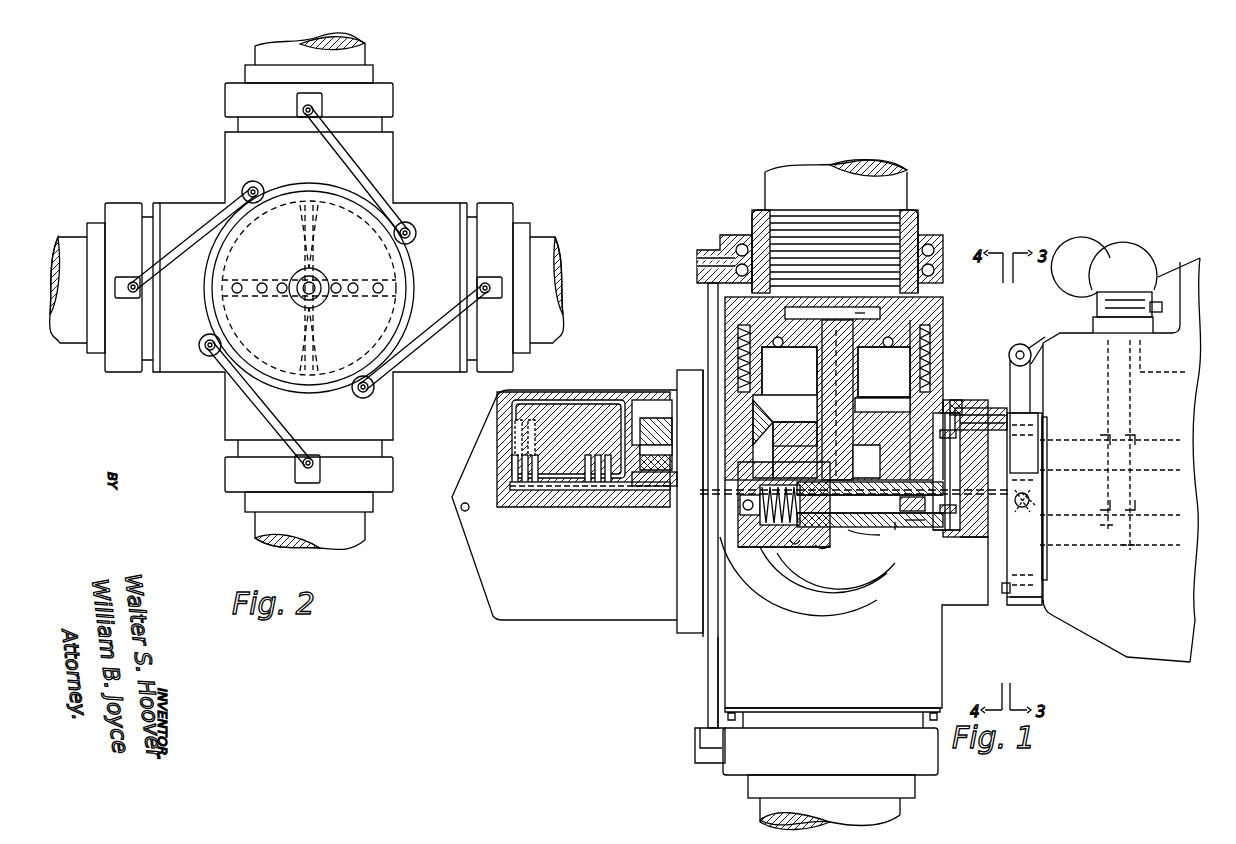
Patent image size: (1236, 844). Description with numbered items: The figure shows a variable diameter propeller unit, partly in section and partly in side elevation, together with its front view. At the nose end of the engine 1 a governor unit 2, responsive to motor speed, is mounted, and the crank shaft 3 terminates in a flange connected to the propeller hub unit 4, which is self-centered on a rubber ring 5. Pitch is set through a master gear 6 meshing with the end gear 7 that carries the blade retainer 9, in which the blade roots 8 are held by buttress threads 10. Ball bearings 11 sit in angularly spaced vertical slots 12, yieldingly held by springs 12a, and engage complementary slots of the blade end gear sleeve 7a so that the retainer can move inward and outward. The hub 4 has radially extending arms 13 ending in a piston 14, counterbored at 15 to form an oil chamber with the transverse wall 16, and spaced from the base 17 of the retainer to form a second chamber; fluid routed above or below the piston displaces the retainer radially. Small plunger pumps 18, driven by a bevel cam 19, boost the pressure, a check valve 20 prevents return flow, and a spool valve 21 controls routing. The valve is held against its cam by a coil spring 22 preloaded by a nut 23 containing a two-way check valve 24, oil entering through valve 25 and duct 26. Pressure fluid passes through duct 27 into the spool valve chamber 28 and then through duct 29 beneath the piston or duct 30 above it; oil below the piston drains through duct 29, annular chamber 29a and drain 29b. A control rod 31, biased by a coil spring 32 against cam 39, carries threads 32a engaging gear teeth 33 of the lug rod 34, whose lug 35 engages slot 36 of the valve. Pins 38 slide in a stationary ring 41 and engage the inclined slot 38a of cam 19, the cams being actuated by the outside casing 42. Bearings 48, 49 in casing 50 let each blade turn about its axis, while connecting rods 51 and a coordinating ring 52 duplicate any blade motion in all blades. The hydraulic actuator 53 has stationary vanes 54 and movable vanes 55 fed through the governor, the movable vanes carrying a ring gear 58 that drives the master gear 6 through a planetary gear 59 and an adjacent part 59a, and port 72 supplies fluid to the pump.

In FIG. 1, the engine nose end 1 is at (1120, 476).
In FIG. 1, the governor unit 2 is at (1128, 258).
In FIG. 1, the crank shaft 3 is at (1035, 490).
In FIG. 2, the propeller hub unit 4 is at (395, 406).
In FIG. 1, the propeller hub unit 4 is at (945, 615).
In FIG. 1, the rubber ring 5 is at (981, 401).
In FIG. 1, the master gear 6 is at (735, 440).
In FIG. 1, the end gear 7 is at (735, 410).
In FIG. 1, the blade end gear sleeve 7a is at (740, 333).
In FIG. 1, the blade roots 8 is at (908, 192).
In FIG. 1, the blade retainer 9 is at (844, 237).
In FIG. 1, the buttress threads 10 is at (790, 212).
In FIG. 1, the ball bearings 11 is at (935, 345).
In FIG. 1, the vertical slots 12 is at (945, 375).
In FIG. 1, the springs 12a is at (943, 322).
In FIG. 1, the radially extending arms 13 is at (856, 383).
In FIG. 1, the piston 14 is at (782, 346).
In FIG. 1, the counterbore 15 is at (810, 313).
In FIG. 1, the transverse wall 16 is at (870, 313).
In FIG. 1, the base of blade retainer 17 is at (788, 391).
In FIG. 1, the plunger pumps 18 is at (1018, 413).
In FIG. 1, the cam 19 is at (1006, 594).
In FIG. 1, the check valve 20 is at (985, 408).
In FIG. 1, the spool valve 21 is at (870, 504).
In FIG. 1, the coil spring 22 is at (755, 527).
In FIG. 1, the nut 23 is at (745, 552).
In FIG. 1, the two-way check valve 24 is at (745, 508).
In FIG. 1, the valve 25 is at (960, 530).
In FIG. 1, the duct 26 is at (945, 535).
In FIG. 1, the duct 27 is at (882, 374).
In FIG. 1, the spool valve chamber 28 is at (791, 505).
In FIG. 1, the duct 29 is at (820, 368).
In FIG. 1, the annular chamber 29a is at (795, 551).
In FIG. 1, the drain 29b is at (820, 559).
In FIG. 1, the duct 30 is at (866, 356).
In FIG. 1, the control rod 31 is at (1016, 462).
In FIG. 1, the coil spring 32 is at (1040, 420).
In FIG. 1, the threads 32a is at (913, 506).
In FIG. 1, the gear teeth 33 is at (886, 535).
In FIG. 1, the lug rod 34 is at (870, 600).
In FIG. 1, the lug 35 is at (897, 530).
In FIG. 1, the slot 36 is at (912, 522).
In FIG. 1, the pins 38 is at (1030, 510).
In FIG. 1, the inclined slot 38a is at (1045, 504).
In FIG. 1, the cam 39 is at (1047, 532).
In FIG. 1, the ring 41 is at (1037, 597).
In FIG. 1, the outside casing 42 is at (1035, 606).
In FIG. 1, the bearing 48 is at (943, 250).
In FIG. 1, the bearing 49 is at (943, 270).
In FIG. 2, the bearing casing 50 is at (393, 101).
In FIG. 1, the bearing casing 50 is at (722, 248).
In FIG. 2, the connecting rod 51 is at (372, 186).
In FIG. 1, the connecting rod 51 is at (708, 300).
In FIG. 2, the coordinating ring 52 is at (407, 270).
In FIG. 1, the coordinating ring 52 is at (694, 366).
In FIG. 1, the hydraulic actuator 53 is at (565, 488).
In FIG. 2, the stationary vanes 54 is at (362, 280).
In FIG. 2, the movable vanes 55 is at (312, 335).
In FIG. 1, the movable vanes 55 is at (555, 395).
In FIG. 1, the ring gear 58 is at (665, 490).
In FIG. 1, the planetary gear 59 is at (675, 420).
In FIG. 1, the coupling plate 59a is at (678, 400).
In FIG. 1, the port 72 is at (1152, 367).